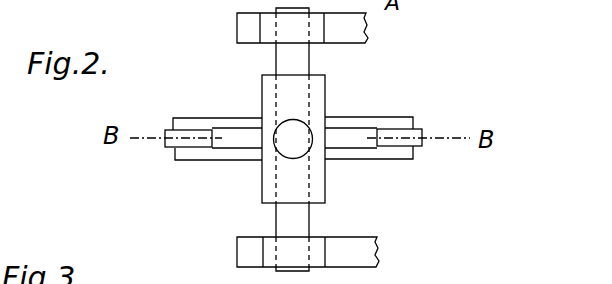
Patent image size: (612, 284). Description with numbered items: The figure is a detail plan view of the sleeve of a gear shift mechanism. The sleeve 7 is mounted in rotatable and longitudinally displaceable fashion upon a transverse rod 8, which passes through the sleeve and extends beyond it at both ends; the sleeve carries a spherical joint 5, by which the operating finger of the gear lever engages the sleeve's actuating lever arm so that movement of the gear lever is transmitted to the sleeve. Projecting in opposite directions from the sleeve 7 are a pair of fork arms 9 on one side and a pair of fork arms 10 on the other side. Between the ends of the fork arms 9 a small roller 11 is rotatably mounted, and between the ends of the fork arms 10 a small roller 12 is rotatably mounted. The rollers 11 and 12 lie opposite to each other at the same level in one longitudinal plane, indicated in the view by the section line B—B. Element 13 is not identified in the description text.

The spherical joint 5 is at (268, 160).
The sleeve 7 is at (326, 97).
The transverse rod 8 is at (285, 58).
The fork arms 9 is at (188, 124).
The fork arms 10 is at (386, 115).
The roller 11 is at (167, 148).
The roller 12 is at (425, 129).
The bar 13 is at (367, 40).